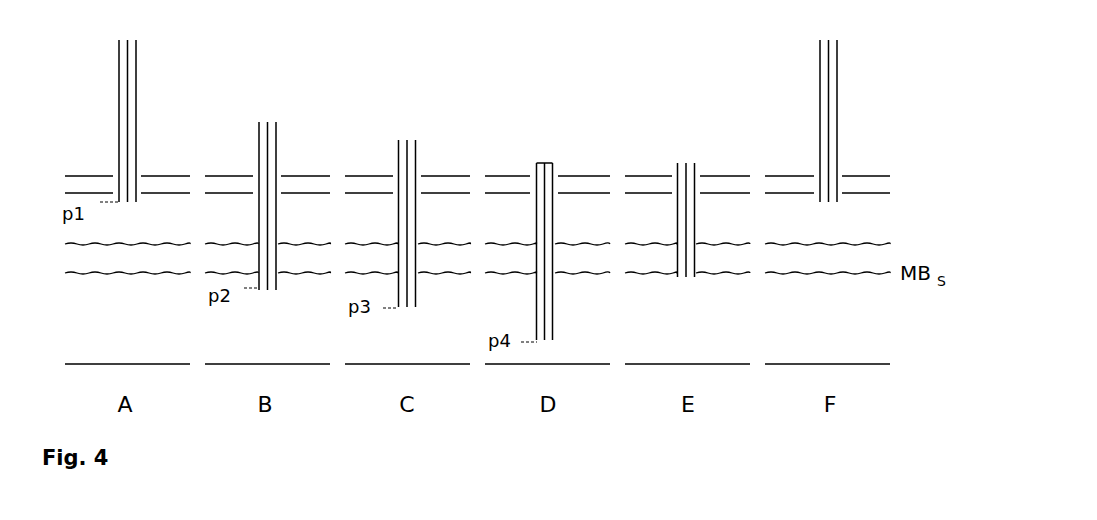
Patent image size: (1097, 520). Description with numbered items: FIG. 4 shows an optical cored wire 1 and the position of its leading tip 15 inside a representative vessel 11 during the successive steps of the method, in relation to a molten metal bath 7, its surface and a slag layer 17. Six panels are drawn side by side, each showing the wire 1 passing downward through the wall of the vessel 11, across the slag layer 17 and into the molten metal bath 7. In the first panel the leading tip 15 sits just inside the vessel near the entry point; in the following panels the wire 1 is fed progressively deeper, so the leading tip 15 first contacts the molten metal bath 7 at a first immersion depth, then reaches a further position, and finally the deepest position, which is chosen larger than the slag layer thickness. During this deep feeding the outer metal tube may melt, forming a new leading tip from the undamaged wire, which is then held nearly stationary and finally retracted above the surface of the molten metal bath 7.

The optical cored wire 1 is at (120, 102).
The leading tip 15 is at (132, 202).
The vessel 11 is at (883, 200).
The slag layer 17 is at (887, 253).
The molten metal bath 7 is at (887, 309).